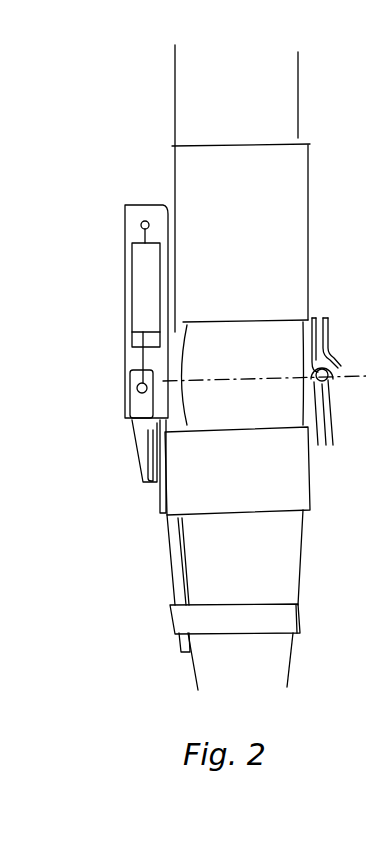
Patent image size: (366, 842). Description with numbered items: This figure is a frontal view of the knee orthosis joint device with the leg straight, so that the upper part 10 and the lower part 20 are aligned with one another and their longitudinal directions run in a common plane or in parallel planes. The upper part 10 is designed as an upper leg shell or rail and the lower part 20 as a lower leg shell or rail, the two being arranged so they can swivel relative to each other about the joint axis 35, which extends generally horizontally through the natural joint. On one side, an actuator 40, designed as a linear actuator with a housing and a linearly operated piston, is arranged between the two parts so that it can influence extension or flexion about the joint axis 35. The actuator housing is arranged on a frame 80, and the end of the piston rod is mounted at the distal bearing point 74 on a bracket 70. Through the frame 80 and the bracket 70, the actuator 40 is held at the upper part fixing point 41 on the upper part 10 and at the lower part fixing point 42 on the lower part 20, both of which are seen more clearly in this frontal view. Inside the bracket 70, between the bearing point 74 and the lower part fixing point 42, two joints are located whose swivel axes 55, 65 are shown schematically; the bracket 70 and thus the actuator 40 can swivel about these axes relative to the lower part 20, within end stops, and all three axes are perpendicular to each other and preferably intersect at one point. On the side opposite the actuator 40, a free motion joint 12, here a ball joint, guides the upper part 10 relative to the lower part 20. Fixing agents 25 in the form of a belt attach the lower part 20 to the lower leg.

The upper part 10 is at (183, 168).
The free motion joint 12 is at (345, 359).
The lower part 20 is at (172, 568).
The fixing agents 25 is at (278, 617).
The joint axis 35 is at (133, 386).
The actuator 40 is at (135, 295).
The upper part fixing point 41 is at (163, 205).
The lower part fixing point 42 is at (150, 500).
The swivel axis 55 is at (138, 390).
The swivel axis 65 is at (150, 500).
The bracket 70 is at (140, 458).
The distal bearing point 74 is at (147, 393).
The frame 80 is at (124, 226).